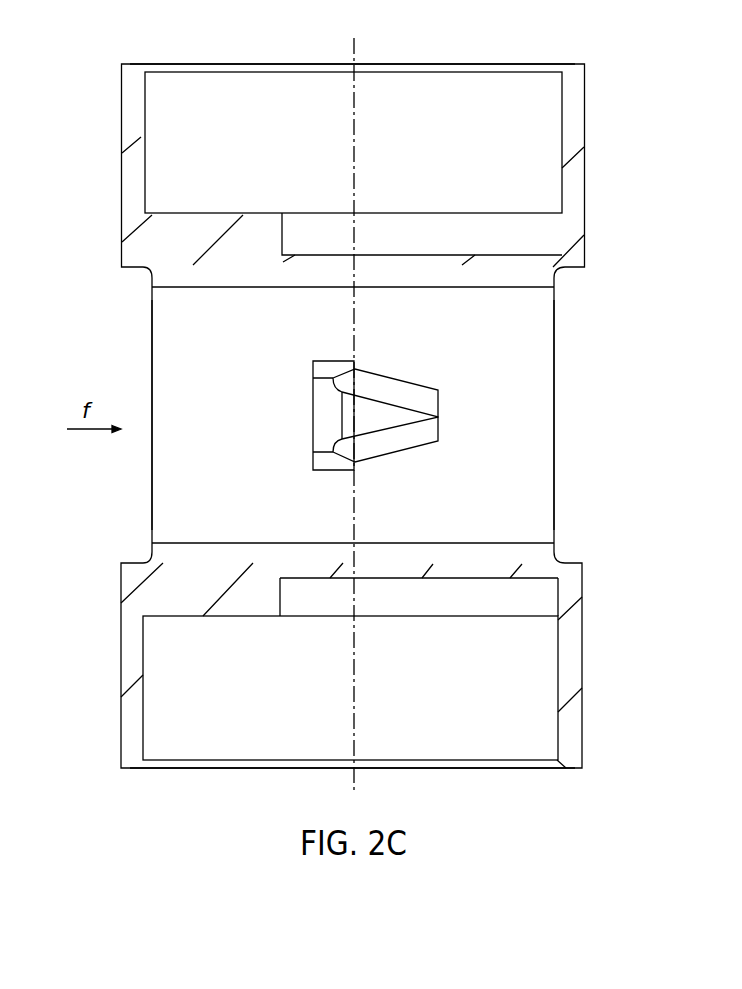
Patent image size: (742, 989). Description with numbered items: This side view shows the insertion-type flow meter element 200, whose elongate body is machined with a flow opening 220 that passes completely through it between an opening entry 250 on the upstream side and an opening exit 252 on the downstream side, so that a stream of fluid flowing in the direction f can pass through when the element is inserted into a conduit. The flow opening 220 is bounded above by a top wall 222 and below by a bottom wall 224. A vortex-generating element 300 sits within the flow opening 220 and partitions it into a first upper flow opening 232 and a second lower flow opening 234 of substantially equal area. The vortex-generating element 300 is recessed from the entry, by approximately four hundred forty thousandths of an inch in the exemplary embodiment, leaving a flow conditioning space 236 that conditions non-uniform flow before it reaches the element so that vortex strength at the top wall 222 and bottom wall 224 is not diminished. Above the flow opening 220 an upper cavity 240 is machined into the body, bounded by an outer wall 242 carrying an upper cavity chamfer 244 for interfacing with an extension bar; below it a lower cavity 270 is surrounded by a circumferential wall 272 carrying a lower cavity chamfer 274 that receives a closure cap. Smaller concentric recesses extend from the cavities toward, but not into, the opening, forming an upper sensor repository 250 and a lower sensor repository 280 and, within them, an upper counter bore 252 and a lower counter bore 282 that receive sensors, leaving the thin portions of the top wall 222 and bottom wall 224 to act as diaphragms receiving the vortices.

The insertion-type flow meter element 200 is at (688, 75).
The flow opening 220 is at (225, 343).
The top wall 222 is at (418, 267).
The bottom wall 224 is at (368, 578).
The first upper flow opening 232 is at (398, 329).
The second lower flow opening 234 is at (404, 493).
The flow conditioning space 236 is at (197, 426).
The upper cavity 240 is at (406, 148).
The outer wall 242 is at (584, 130).
The upper cavity chamfer 244 is at (570, 64).
The upper sensor repository 250 is at (127, 470).
The upper counter bore 252 is at (372, 267).
The lower cavity 270 is at (434, 693).
The circumferential wall 272 is at (582, 700).
The lower cavity chamfer 274 is at (563, 767).
The lower sensor repository 280 is at (506, 613).
The lower counter bore 282 is at (390, 578).
The vortex-generating element 300 is at (397, 378).